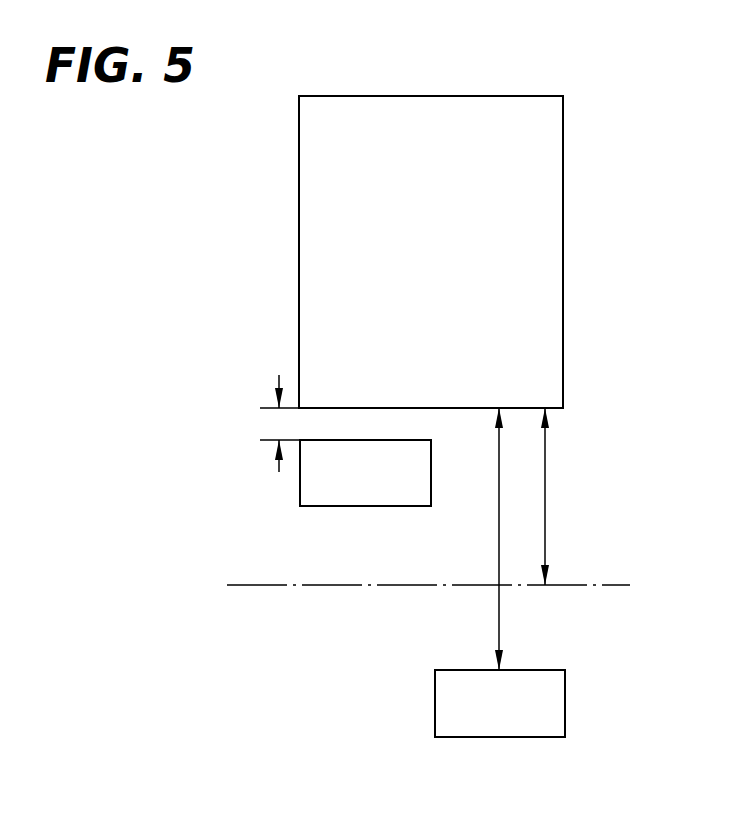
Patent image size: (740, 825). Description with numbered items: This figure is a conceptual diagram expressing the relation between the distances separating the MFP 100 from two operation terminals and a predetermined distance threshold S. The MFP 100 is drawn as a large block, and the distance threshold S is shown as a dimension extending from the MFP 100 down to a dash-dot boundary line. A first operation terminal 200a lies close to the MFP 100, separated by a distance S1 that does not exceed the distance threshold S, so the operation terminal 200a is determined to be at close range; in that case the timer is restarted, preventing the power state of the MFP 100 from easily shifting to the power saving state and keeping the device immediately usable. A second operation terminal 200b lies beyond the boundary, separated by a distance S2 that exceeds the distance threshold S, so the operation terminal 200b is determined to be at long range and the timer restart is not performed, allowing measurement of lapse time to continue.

The MFP 100 is at (565, 237).
The operation terminal 200a is at (363, 507).
The operation terminal 200b is at (567, 703).
The distance threshold S is at (547, 492).
The distance S1 is at (277, 425).
The distance S2 is at (497, 552).